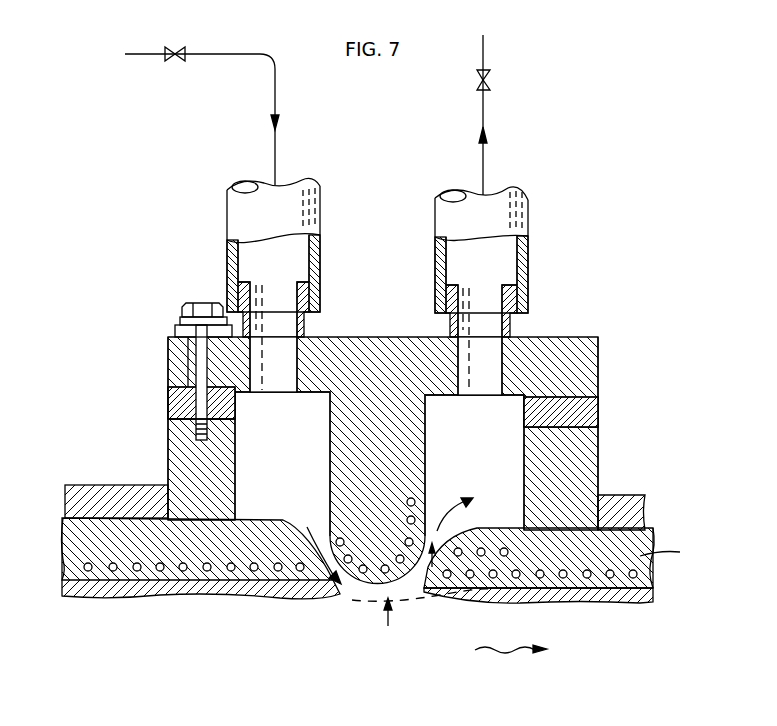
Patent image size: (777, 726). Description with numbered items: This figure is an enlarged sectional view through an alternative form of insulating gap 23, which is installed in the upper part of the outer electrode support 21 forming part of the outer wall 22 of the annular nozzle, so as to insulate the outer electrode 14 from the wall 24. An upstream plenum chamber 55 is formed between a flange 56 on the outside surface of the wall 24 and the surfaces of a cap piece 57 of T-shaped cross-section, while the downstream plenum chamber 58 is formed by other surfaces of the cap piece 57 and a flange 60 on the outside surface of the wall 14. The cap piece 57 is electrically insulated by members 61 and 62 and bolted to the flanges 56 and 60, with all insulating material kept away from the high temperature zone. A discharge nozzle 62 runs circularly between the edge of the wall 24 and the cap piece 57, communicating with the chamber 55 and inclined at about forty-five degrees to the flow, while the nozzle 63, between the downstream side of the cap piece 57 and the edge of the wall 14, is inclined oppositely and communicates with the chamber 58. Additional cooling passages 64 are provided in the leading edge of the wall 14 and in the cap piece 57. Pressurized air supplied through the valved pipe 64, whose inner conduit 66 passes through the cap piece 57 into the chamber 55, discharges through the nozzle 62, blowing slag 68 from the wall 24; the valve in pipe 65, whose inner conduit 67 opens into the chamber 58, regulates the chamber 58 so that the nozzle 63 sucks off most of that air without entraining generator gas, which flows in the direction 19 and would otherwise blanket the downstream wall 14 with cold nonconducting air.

The outer electrode 14 is at (670, 552).
The direction of web travel 19 is at (505, 650).
The outer electrode support 21 is at (645, 511).
The outer wall 22 is at (105, 490).
The insulating gap 23 is at (422, 618).
The wall 24 is at (77, 538).
The upstream plenum chamber 55 is at (292, 434).
The flange 56 is at (187, 451).
The cap piece 57 is at (380, 420).
The downstream plenum chamber 58 is at (486, 439).
The flange 60 is at (585, 470).
The insulating member 61 is at (166, 402).
The discharge nozzle 62 is at (598, 409).
The downstream nozzle 63 is at (463, 532).
The valved pipe 64 is at (245, 213).
The pipe 65 is at (517, 228).
The supply pipe 66 is at (247, 276).
The exhaust pipe 67 is at (453, 278).
The slag 68 is at (226, 590).